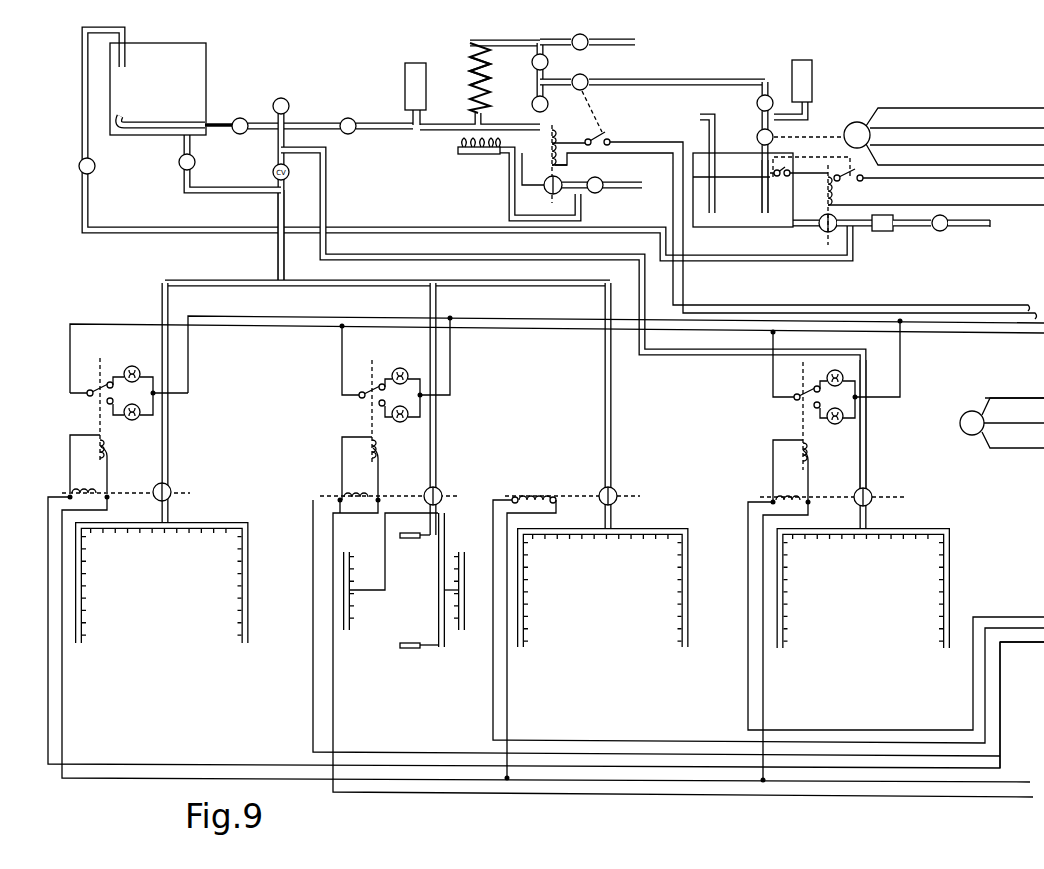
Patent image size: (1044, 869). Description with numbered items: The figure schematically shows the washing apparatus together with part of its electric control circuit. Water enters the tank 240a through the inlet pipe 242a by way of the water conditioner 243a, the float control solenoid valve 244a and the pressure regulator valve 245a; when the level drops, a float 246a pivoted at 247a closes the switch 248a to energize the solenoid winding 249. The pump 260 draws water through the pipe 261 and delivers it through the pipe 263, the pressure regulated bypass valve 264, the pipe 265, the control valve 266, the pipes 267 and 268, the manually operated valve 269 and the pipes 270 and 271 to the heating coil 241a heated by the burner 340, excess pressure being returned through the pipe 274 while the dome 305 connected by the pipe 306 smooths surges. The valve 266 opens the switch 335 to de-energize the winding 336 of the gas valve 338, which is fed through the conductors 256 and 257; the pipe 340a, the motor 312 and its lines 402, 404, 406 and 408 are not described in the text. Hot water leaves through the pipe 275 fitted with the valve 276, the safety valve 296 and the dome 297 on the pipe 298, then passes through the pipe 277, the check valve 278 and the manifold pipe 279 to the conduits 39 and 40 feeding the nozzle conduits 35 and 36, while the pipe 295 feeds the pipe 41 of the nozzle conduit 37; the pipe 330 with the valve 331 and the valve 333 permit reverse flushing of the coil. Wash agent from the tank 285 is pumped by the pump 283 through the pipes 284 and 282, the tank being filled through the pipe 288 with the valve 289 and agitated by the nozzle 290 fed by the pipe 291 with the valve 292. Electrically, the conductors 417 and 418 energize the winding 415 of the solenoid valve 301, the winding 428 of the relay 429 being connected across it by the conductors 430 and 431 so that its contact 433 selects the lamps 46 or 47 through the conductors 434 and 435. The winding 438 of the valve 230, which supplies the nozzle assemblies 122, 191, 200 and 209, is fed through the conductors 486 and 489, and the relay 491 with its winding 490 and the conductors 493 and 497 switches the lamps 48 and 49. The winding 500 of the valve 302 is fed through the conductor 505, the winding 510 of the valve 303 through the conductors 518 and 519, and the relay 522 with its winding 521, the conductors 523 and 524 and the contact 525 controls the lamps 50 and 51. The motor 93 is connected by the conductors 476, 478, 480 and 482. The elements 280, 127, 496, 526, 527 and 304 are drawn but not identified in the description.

The pipe 288 is at (84, 74).
The manual valve 289 is at (84, 158).
The nozzle 290 is at (124, 118).
The tank 285 is at (207, 82).
The pipe 291 is at (226, 119).
The manual valve 292 is at (243, 118).
The safety valve 296 is at (288, 98).
The pipe 275 is at (319, 128).
The manually operated valve 276 is at (359, 127).
The pipe 277 is at (278, 145).
The check valve 278 is at (324, 196).
The manifold pipe 279 is at (278, 212).
The header pipe 280 is at (271, 281).
The pipe 282 is at (228, 190).
The pump 283 is at (172, 166).
The pipe 284 is at (184, 144).
The pipe 295 is at (868, 440).
The pipe 271 is at (491, 40).
The heating coil 241a is at (472, 71).
The pipe 270 is at (537, 48).
The manually operated valve 269 is at (532, 63).
The pipe 268 is at (537, 80).
The air chamber or dome 297 is at (427, 92).
The pipe 298 is at (426, 127).
The pipe 330 is at (572, 40).
The manual valve 331 is at (588, 38).
The pipe 267 is at (561, 67).
The control valve 266 is at (590, 77).
The pipe 265 is at (661, 81).
The manual valve 333 is at (532, 106).
The switch 335 is at (584, 118).
The conductor 257 is at (652, 123).
The pipe 274 is at (699, 118).
The pressure regulated bypass valve 264 is at (768, 94).
The gas air chamber or dome 305 is at (813, 66).
The motor 312 is at (846, 126).
The pipe 306 is at (810, 115).
The pipe 263 is at (760, 120).
The pump 260 is at (757, 138).
The pipe 261 is at (760, 185).
The pivot 247a is at (796, 161).
The float 246a is at (792, 177).
The switch 248a is at (862, 185).
The solenoid winding 249 is at (824, 206).
The water conditioner 243a is at (883, 232).
The pressure regulator valve 245a is at (944, 233).
The inlet pipe 242a is at (991, 230).
The float control solenoid valve 244a is at (820, 231).
The tank or reservoir 240a is at (740, 217).
The burner 340 is at (456, 150).
The burner supply pipe 340a is at (504, 148).
The solenoid winding 336 is at (548, 162).
The solenoid operated valve 338 is at (545, 193).
The conductor 256 is at (650, 161).
The motor lead 402 is at (942, 99).
The motor lead 404 is at (942, 126).
The motor lead 406 is at (939, 147).
The motor lead 408 is at (940, 164).
The conductor 434 is at (70, 352).
The conductor 435 is at (190, 358).
The red signal lamp 46 is at (129, 365).
The green signal lamp 47 is at (136, 424).
The relay contact 433 is at (107, 393).
The relay 429 is at (82, 419).
The conductor 430 is at (70, 445).
The relay winding 428 is at (106, 452).
The conductor 431 is at (109, 472).
The solenoid winding 415 is at (78, 490).
The conduit 39 is at (169, 435).
The solenoid valve 301 is at (171, 487).
The conductor 497 is at (344, 353).
The green lamp 49 is at (405, 366).
The red lamp 48 is at (408, 402).
The switch 496 is at (364, 388).
The relay 491 is at (362, 425).
The relay winding 490 is at (376, 448).
The pipe 127 is at (437, 441).
The solenoid winding 438 is at (390, 468).
The conductor 493 is at (382, 485).
The solenoid valve 230 is at (441, 490).
The solenoid winding 500 is at (537, 490).
The conduit 40 is at (612, 468).
The solenoid valve 302 is at (617, 491).
The conductor 527 is at (773, 373).
The green signal lamp 50 is at (827, 372).
The signal lamp 51 is at (834, 425).
The movable contact 525 is at (820, 397).
The relay 522 is at (783, 417).
The conductor 526 is at (902, 362).
The conductor 523 is at (773, 450).
The relay winding 521 is at (808, 451).
The solenoid winding 510 is at (778, 495).
The conductor 524 is at (810, 480).
The solenoid valve 303 is at (873, 491).
The conduit 41 is at (868, 516).
The conductor 476 is at (1010, 394).
The conductor 478 is at (1019, 415).
The conductor 480 is at (1019, 432).
The conductor 482 is at (1019, 451).
The three phase alternating current motor 93 is at (962, 432).
The nozzle conduit 35 is at (247, 643).
The nozzle conduit 36 is at (521, 649).
The nozzle conduit 37 is at (946, 648).
The nozzle assembly 200 is at (408, 540).
The nozzle assembly 209 is at (349, 632).
The nozzle assembly 122 is at (410, 650).
The nozzle assembly 191 is at (461, 632).
The conductor 417 is at (65, 698).
The conductor 418 is at (149, 762).
The conductor 486 is at (312, 700).
The conductor 489 is at (334, 703).
The conductor 304 is at (508, 704).
The conductor 519 is at (747, 695).
The conductor 518 is at (765, 700).
The conductor 505 is at (1022, 705).